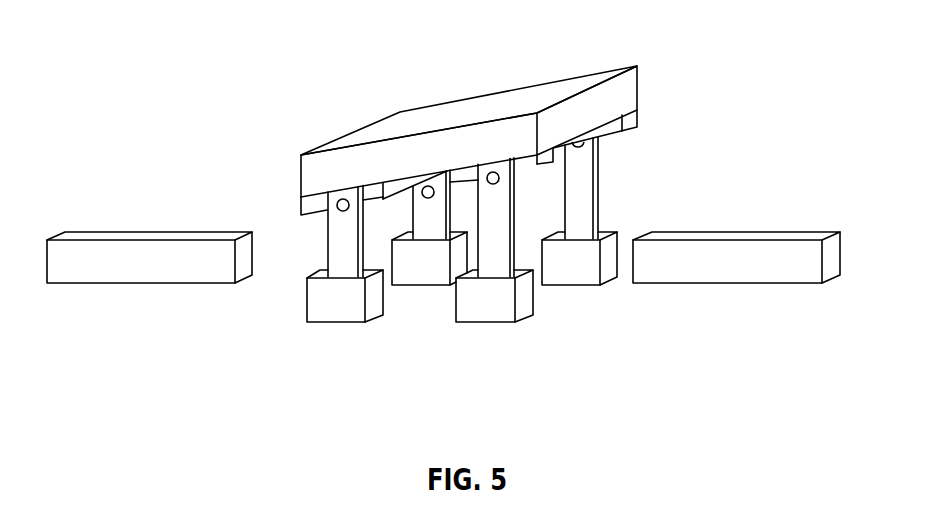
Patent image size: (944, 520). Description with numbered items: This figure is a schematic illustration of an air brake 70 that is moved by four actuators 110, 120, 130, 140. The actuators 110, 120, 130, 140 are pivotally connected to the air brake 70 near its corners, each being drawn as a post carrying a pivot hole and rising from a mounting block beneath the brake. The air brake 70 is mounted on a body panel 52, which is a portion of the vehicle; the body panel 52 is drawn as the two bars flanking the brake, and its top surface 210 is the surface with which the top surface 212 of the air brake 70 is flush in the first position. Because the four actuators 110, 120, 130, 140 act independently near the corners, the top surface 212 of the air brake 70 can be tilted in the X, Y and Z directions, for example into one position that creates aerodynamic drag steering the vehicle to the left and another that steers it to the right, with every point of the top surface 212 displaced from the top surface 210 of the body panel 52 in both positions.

The air brake 70 is at (469, 110).
The top surface of the air brake 212 is at (423, 127).
The body panel 52 is at (90, 263).
The top surface of the body panel 210 is at (200, 232).
The actuator 120 is at (330, 323).
The actuator 130 is at (408, 288).
The actuator 110 is at (495, 323).
The actuator 140 is at (587, 288).